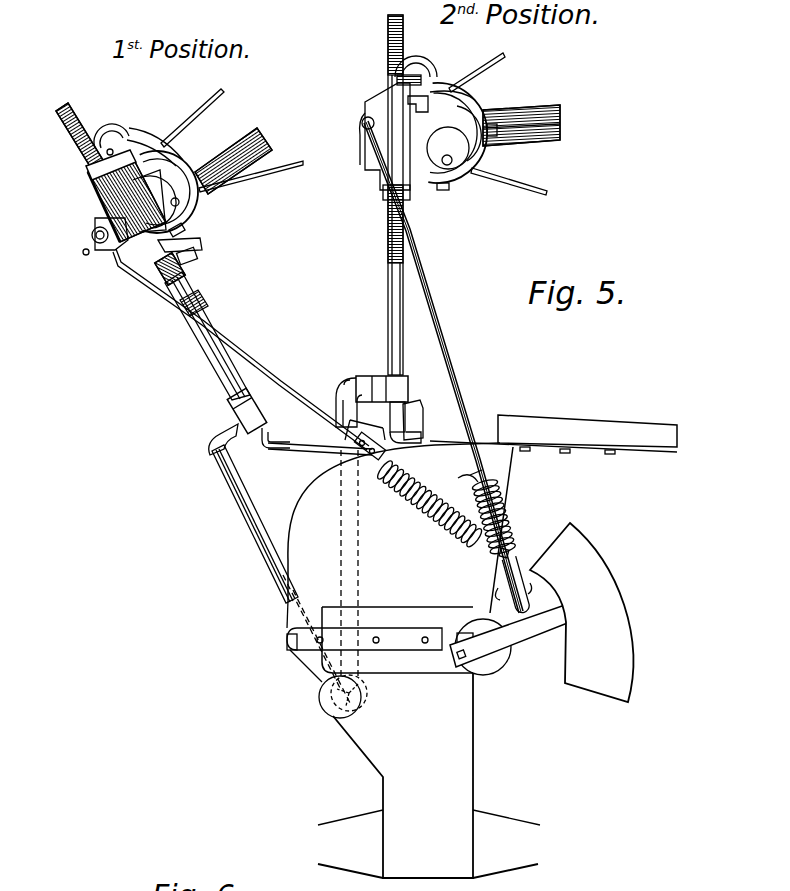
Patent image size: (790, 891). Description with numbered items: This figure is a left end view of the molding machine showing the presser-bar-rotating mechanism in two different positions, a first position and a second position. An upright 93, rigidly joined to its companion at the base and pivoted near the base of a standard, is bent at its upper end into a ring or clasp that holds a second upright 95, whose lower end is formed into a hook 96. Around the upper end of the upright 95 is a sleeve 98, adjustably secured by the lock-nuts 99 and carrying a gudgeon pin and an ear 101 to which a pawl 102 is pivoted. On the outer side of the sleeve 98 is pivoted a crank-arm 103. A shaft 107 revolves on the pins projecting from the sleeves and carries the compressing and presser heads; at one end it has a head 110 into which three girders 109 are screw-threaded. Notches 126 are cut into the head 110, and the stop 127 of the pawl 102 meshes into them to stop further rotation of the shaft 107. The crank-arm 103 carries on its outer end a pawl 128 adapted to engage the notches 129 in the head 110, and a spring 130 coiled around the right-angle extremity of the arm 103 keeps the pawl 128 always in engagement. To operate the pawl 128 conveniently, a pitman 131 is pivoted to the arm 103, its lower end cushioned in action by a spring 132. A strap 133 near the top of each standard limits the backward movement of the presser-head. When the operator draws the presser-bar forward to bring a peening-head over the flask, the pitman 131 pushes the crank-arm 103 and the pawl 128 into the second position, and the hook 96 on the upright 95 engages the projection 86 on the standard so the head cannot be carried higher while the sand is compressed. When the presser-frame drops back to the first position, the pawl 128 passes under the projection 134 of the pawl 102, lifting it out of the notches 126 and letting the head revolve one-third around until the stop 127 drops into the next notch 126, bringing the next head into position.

The projection 86 is at (447, 435).
The upright 93 is at (250, 505).
The upright 95 is at (206, 382).
The hook 96 is at (275, 448).
The sleeve 98 is at (98, 205).
The lock-nuts 99 is at (90, 178).
The ear 101 is at (126, 130).
The pawl 102 is at (160, 138).
The crank-arm 103 is at (106, 252).
The shaft 107 is at (258, 128).
The girders 109 is at (503, 190).
The head 110 is at (448, 148).
The notches 126 is at (186, 232).
The stop 127 is at (180, 152).
The pawl 128 is at (472, 93).
The notches 129 is at (497, 160).
The spring 130 is at (185, 276).
The pitman 131 is at (448, 362).
The spring 132 is at (455, 535).
The strap 133 is at (306, 455).
The projection 134 is at (497, 129).